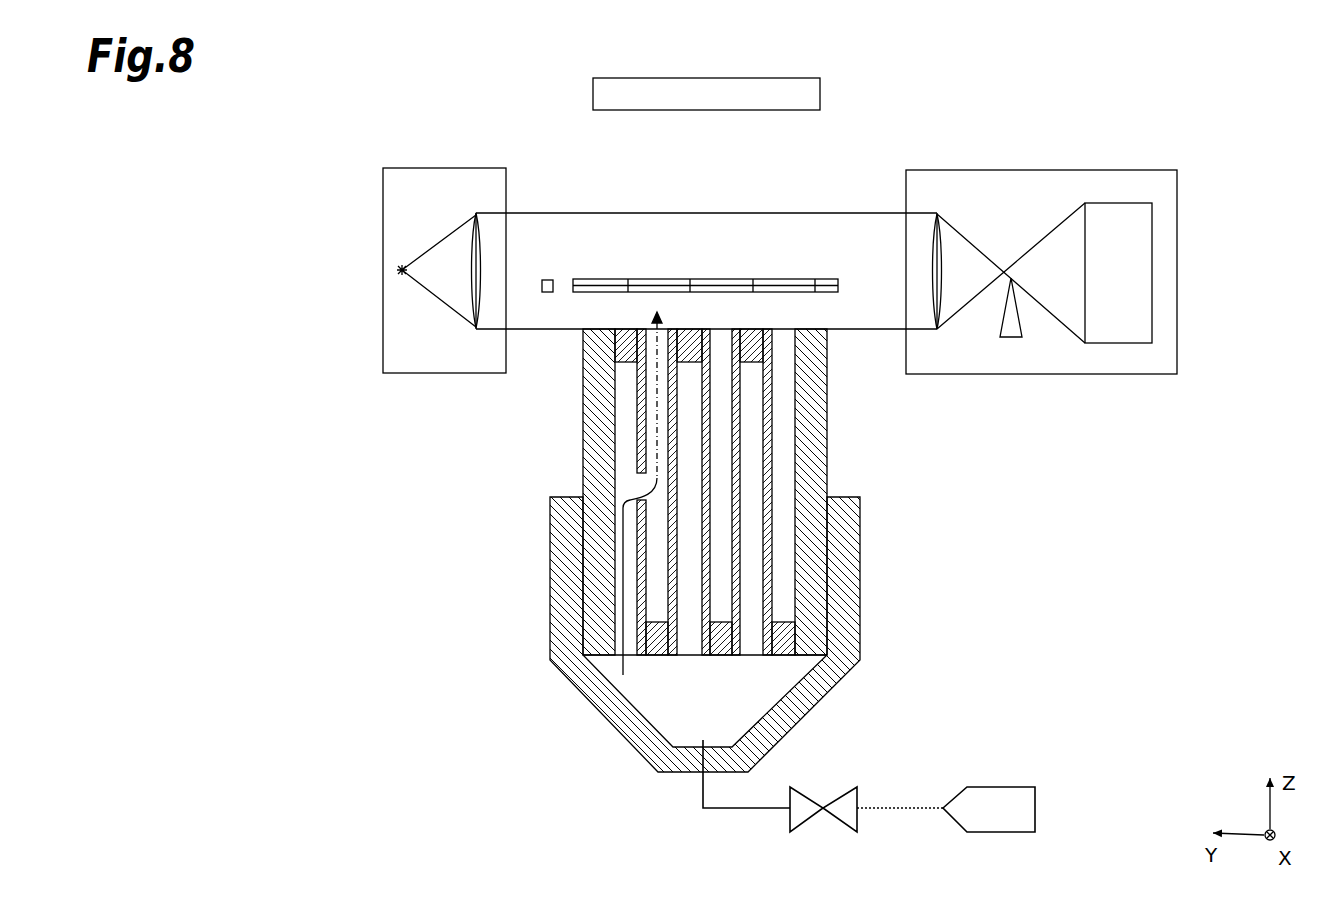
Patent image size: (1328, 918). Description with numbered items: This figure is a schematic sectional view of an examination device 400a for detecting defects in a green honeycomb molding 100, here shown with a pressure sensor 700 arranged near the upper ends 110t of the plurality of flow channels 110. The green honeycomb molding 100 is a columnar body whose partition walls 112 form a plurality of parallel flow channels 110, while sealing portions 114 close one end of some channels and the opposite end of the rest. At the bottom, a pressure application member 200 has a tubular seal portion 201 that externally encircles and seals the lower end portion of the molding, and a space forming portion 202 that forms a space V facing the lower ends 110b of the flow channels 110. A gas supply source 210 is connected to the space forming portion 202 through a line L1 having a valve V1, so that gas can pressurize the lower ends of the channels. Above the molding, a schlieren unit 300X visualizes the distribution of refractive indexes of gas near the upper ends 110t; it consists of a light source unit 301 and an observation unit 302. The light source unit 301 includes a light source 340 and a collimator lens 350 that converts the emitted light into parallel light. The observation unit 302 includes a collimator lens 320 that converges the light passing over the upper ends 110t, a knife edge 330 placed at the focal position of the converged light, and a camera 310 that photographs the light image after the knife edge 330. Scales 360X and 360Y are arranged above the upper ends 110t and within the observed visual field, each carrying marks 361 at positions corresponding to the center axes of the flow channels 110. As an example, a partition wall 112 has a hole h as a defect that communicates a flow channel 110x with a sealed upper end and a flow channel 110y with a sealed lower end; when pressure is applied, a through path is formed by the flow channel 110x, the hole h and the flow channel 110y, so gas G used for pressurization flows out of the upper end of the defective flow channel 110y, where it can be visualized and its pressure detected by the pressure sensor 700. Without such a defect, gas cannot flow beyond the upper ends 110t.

The schlieren unit 300X is at (410, 125).
The pressure sensor 700 is at (820, 95).
The light source unit 301 is at (438, 373).
The observation unit 302 is at (1142, 375).
The collimator lens 350 is at (470, 246).
The light source 340 is at (399, 270).
The scale 360X is at (548, 280).
The scale 360Y is at (608, 279).
The mark 361 is at (670, 279).
The collimator lens 320 is at (930, 268).
The camera 310 is at (1152, 273).
The knife edge 330 is at (1013, 340).
The green honeycomb molding 100 is at (717, 511).
The flow channel 110 is at (698, 508).
The upper end 110t is at (785, 329).
The lower end 110b is at (747, 657).
The flow channel 110x is at (600, 549).
The flow channel 110y is at (645, 578).
The partition wall 112 is at (637, 428).
The sealing portion 114 is at (753, 343).
The gas G is at (655, 373).
The hole h is at (632, 481).
The pressure application member 200 is at (629, 634).
The tubular seal portion 201 is at (548, 620).
The space forming portion 202 is at (617, 718).
The space V is at (652, 706).
The line L1 is at (703, 790).
The valve V1 is at (830, 800).
The gas supply source 210 is at (997, 787).
The examination device 400a is at (1078, 571).